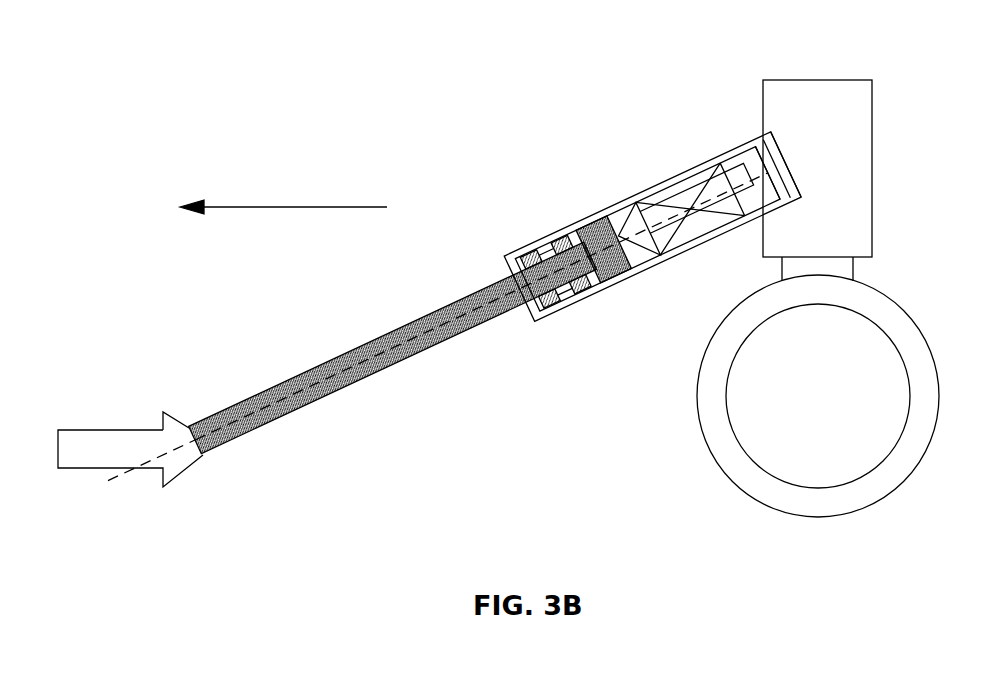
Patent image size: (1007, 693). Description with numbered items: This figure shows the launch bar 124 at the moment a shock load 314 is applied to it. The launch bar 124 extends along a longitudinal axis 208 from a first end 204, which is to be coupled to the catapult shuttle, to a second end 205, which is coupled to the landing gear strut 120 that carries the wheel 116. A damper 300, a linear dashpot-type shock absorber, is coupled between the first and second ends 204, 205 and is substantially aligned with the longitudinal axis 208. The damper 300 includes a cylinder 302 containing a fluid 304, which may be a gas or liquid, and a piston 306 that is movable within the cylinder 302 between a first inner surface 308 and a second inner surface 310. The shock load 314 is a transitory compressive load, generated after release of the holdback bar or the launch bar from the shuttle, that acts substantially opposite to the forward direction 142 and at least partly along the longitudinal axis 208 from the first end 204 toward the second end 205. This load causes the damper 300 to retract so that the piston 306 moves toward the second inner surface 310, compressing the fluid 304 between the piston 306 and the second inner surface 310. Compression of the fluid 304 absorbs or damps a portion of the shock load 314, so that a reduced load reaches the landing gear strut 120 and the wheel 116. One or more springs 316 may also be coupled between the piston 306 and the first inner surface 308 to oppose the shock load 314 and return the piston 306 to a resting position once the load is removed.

The wheel 116 is at (830, 517).
The landing gear strut 120 is at (763, 98).
The launch bar 124 is at (350, 350).
The forward direction 142 is at (318, 207).
The first end 204 is at (132, 494).
The second end 205 is at (795, 160).
The longitudinal axis 208 is at (268, 402).
The damper 300 is at (645, 187).
The cylinder 302 is at (705, 160).
The fluid 304 is at (647, 267).
The piston 306 is at (590, 225).
The first inner surface 308 is at (558, 308).
The second inner surface 310 is at (757, 150).
The shock load 314 is at (145, 430).
The springs 316 is at (577, 298).